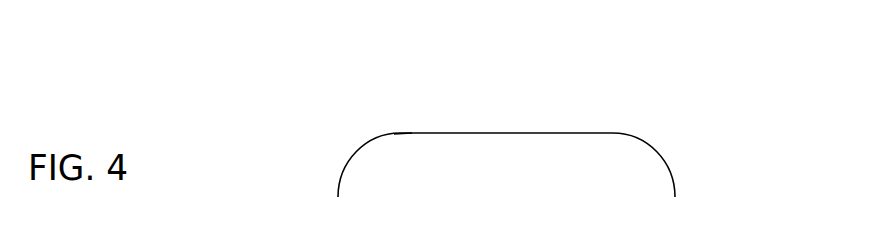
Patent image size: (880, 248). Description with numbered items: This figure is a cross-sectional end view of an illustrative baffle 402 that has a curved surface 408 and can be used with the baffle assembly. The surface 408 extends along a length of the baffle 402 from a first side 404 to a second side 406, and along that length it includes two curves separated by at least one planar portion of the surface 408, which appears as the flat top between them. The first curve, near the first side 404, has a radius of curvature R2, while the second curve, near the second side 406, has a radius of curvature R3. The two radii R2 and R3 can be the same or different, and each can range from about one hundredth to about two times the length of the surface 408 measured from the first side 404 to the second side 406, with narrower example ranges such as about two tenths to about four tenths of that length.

The baffle 402 is at (507, 132).
The first side 404 is at (330, 194).
The second side 406 is at (684, 195).
The curved surface 408 is at (406, 122).
The radius of curvature of the first curve R2 is at (366, 159).
The radius of curvature of the second curve R3 is at (646, 159).